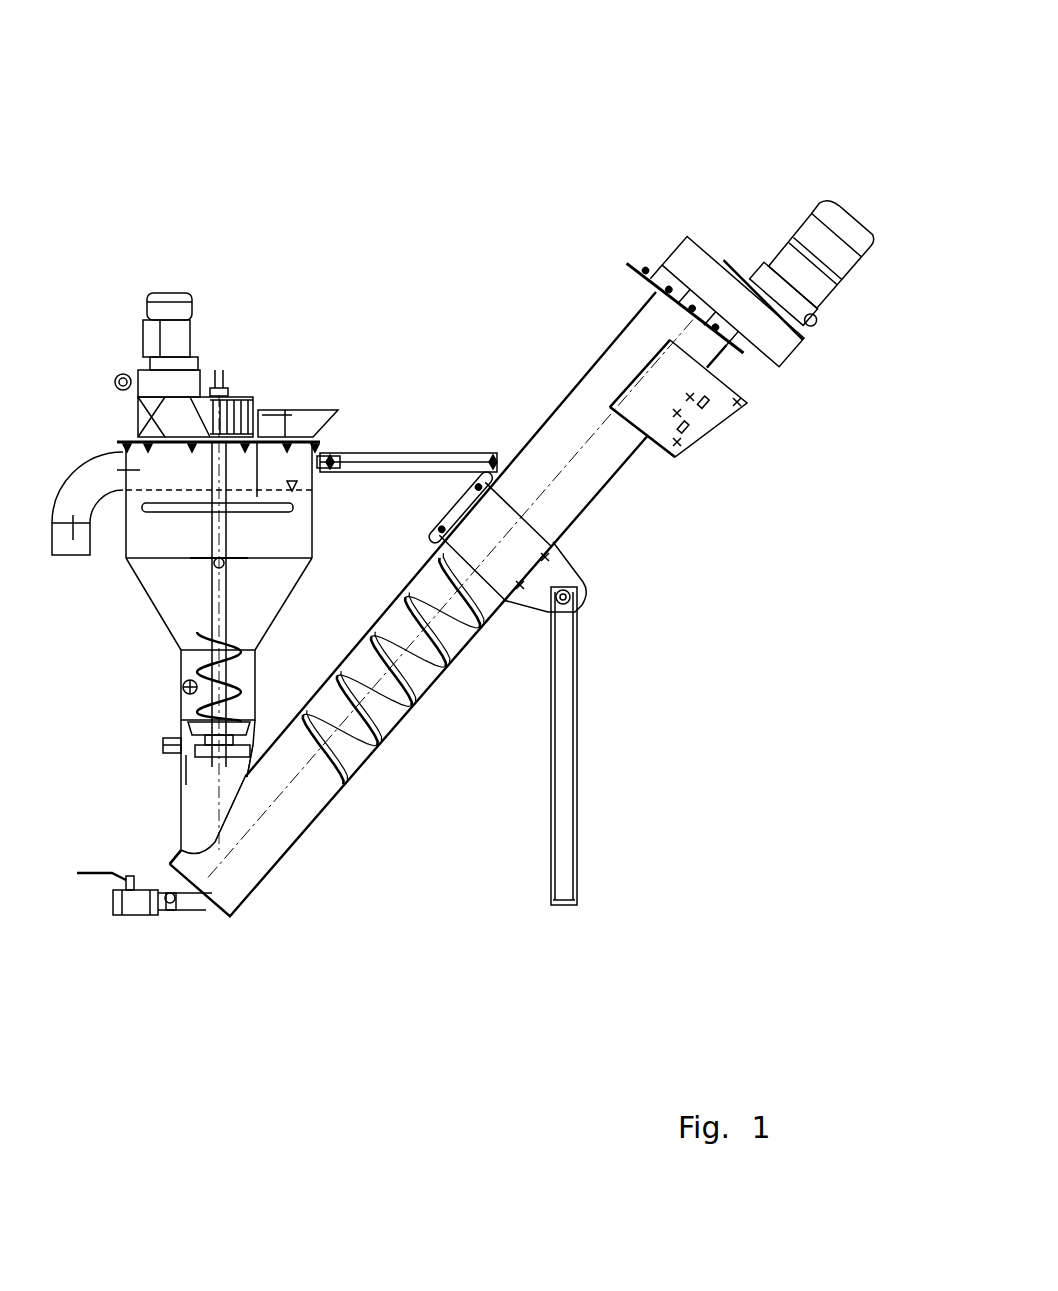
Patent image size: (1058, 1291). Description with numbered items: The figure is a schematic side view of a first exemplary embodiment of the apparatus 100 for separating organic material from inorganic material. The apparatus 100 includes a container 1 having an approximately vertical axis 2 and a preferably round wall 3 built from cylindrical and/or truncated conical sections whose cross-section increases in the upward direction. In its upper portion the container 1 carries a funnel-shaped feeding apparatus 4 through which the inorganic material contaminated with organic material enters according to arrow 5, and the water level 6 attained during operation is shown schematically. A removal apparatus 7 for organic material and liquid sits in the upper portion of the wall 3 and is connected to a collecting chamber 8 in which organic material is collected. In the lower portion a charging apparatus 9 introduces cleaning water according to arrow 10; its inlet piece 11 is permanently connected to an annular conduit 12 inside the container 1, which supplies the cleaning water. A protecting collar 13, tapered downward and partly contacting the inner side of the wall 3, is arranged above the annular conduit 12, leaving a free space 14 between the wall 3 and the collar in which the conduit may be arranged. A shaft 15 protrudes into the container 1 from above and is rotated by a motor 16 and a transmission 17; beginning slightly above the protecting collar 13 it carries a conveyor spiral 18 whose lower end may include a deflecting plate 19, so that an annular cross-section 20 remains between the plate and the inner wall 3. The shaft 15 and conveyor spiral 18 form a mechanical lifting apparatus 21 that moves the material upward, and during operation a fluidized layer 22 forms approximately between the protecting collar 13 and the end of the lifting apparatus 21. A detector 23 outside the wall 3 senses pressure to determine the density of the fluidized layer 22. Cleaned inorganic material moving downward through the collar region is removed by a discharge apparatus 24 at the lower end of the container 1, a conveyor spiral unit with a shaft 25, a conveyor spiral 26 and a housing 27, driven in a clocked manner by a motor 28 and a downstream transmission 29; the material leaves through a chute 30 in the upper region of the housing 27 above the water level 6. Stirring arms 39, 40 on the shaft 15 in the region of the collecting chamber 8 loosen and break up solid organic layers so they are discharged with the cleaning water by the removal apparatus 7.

The apparatus 100 is at (90, 185).
The container 1 is at (322, 250).
The vertical axis 2 is at (233, 367).
The wall 3 is at (313, 530).
The feeding apparatus 4 is at (330, 397).
The arrow 5 is at (293, 397).
The water level 6 is at (320, 440).
The removal apparatus 7 is at (92, 473).
The collecting chamber 8 is at (148, 543).
The charging apparatus 9 is at (162, 747).
The arrow 10 is at (168, 753).
The inlet piece 11 is at (180, 768).
The annular conduit 12 is at (182, 783).
The protecting collar 13 is at (170, 735).
The free space 14 is at (250, 767).
The shaft 15 is at (217, 593).
The motor 16 is at (176, 325).
The transmission 17 is at (202, 377).
The conveyor spiral 18 is at (181, 665).
The deflecting plate 19 is at (252, 737).
The annular cross-section 20 is at (247, 778).
The lifting apparatus 21 is at (247, 678).
The fluidized layer 22 is at (243, 663).
The detector 23 is at (180, 690).
The discharge apparatus 24 is at (300, 853).
The shaft 25 is at (417, 660).
The conveyor spiral 26 is at (383, 660).
The housing 27 is at (453, 653).
The motor 28 is at (792, 252).
The transmission 29 is at (683, 267).
The chute 30 is at (652, 420).
The stirring arm 39 is at (205, 558).
The stirring arm 40 is at (215, 562).